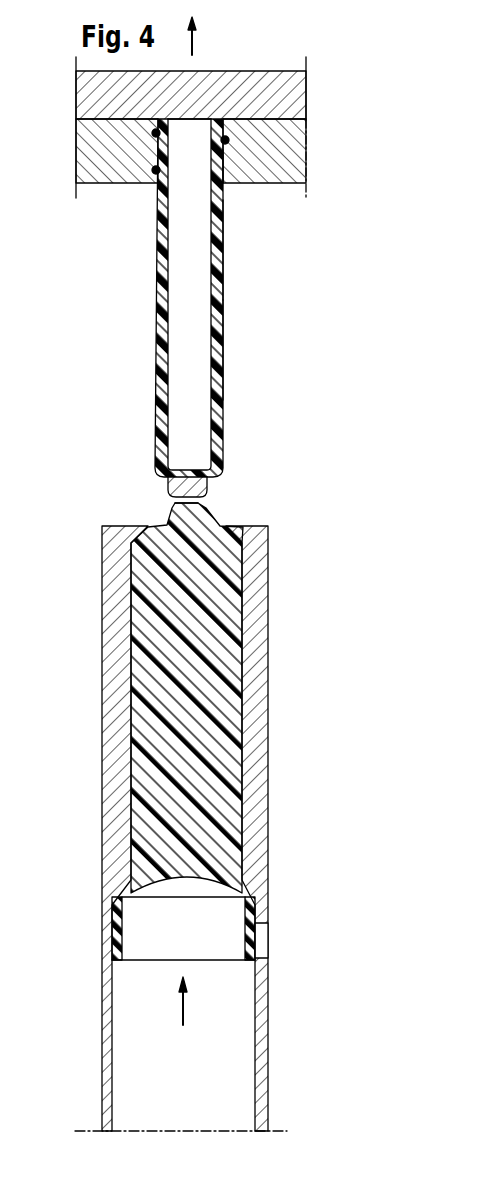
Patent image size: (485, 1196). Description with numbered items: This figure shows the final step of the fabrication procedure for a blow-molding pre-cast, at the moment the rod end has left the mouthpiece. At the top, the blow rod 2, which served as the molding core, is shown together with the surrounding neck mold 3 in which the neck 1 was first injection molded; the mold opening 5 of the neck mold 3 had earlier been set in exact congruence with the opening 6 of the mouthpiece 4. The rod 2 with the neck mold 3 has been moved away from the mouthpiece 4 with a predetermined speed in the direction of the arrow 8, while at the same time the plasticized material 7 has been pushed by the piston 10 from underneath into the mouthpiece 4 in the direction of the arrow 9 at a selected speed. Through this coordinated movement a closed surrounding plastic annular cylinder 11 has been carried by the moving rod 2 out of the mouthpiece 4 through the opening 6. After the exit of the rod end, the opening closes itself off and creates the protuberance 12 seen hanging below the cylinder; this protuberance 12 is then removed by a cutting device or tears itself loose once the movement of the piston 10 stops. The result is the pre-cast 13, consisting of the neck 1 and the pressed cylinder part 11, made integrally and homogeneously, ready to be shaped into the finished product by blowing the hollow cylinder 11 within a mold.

The neck 1 is at (157, 150).
The blow rod 2 is at (158, 242).
The neck mold 3 is at (247, 67).
The mouthpiece 4 is at (262, 544).
The mold opening 5 is at (223, 182).
The opening 6 is at (157, 525).
The plasticized material 7 is at (242, 662).
The arrow 8 is at (198, 38).
The arrow 9 is at (195, 1009).
The piston 10 is at (102, 937).
The plastic annular cylinder 11 is at (223, 255).
The protuberance 12 is at (202, 508).
The pre-cast 13 is at (223, 325).